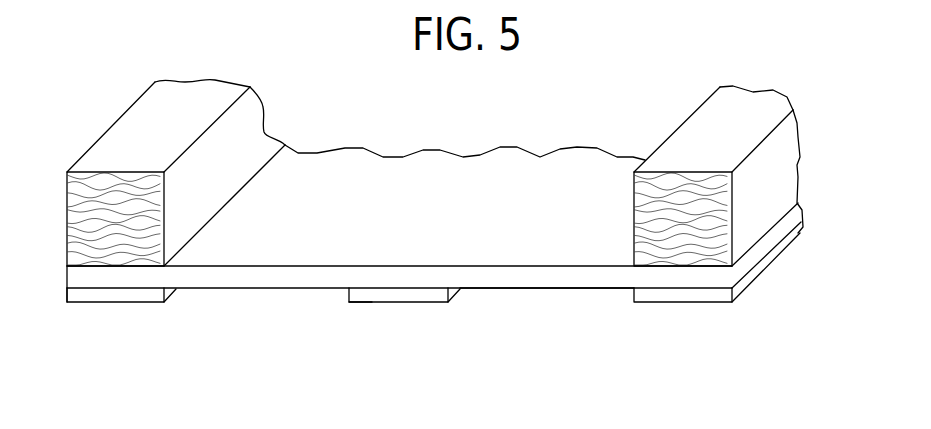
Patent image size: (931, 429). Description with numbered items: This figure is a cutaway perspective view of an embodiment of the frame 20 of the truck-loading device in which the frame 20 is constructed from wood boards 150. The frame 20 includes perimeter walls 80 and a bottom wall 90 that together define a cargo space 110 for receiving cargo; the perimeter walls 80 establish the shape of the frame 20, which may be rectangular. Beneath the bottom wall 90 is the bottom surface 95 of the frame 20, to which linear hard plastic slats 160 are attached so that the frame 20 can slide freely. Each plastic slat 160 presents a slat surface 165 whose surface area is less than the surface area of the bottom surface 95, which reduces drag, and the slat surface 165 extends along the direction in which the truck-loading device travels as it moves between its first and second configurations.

The frame 20 is at (627, 60).
The cargo space 110 is at (300, 58).
The wood boards 150 is at (67, 247).
The perimeter walls 80 is at (67, 208).
The bottom wall 90 is at (563, 288).
The bottom surface 95 is at (523, 313).
The plastic slats 160 is at (113, 303).
The slat surface 165 is at (360, 318).